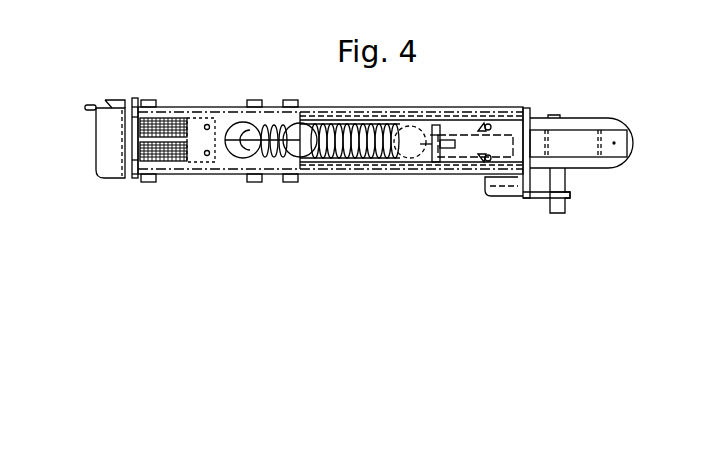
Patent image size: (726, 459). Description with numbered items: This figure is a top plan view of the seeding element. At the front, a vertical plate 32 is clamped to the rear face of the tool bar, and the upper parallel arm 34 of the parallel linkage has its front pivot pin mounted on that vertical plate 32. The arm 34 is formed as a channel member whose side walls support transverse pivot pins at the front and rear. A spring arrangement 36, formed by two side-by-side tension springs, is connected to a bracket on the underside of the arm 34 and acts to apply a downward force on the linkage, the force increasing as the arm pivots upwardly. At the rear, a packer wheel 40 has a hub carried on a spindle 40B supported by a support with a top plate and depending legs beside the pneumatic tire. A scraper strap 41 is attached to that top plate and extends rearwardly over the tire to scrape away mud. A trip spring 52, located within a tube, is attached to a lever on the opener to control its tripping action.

The vertical plate 32 is at (133, 110).
The upper parallel arm 34 is at (217, 163).
The spring arrangement 36 is at (168, 115).
The packer wheel 40 is at (613, 128).
The spindle 40B is at (558, 183).
The scraper strap 41 is at (573, 147).
The trip spring 52 is at (362, 163).